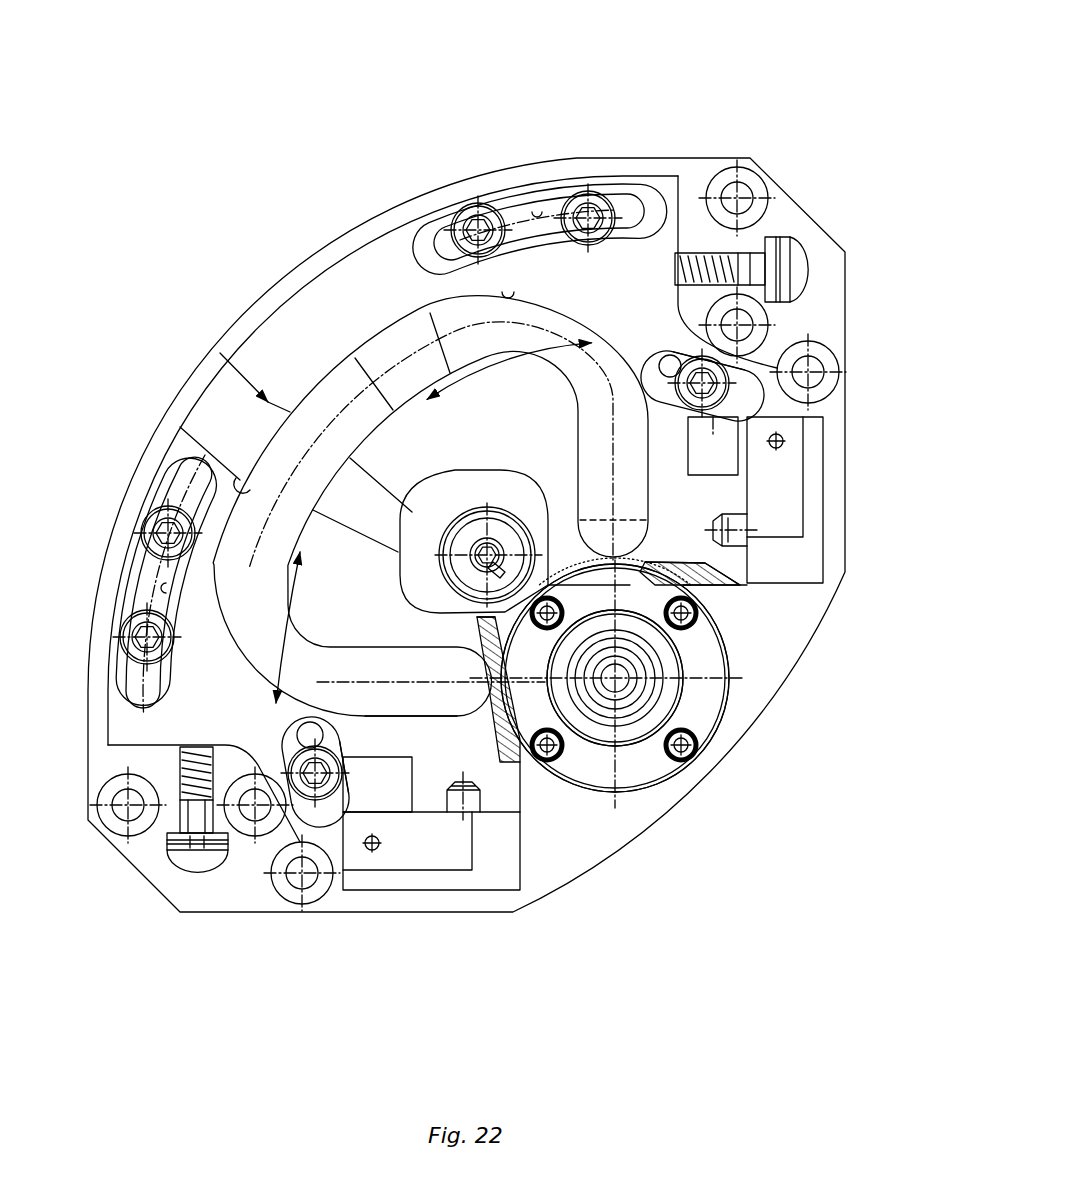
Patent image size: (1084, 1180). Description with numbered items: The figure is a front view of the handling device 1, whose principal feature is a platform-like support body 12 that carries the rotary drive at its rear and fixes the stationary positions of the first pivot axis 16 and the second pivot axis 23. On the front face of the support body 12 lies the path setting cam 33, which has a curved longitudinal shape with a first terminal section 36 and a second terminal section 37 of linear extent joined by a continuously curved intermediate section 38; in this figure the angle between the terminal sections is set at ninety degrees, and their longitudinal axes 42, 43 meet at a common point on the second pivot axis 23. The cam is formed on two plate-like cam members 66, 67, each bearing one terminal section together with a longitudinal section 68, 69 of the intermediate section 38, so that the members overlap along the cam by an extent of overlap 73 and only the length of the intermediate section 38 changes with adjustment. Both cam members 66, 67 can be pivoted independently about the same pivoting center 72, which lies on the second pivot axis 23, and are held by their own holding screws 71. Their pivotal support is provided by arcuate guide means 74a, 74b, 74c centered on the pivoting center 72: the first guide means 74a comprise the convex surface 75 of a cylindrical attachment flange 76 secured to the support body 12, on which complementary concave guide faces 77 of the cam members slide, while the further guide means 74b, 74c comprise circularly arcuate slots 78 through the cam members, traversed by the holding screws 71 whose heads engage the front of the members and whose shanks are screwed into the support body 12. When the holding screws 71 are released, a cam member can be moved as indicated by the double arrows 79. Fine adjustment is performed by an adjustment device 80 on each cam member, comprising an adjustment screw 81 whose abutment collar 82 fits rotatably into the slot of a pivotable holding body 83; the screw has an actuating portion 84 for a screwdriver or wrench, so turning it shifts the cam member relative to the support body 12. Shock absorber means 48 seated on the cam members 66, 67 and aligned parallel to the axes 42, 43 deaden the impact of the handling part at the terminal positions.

The handling device 1 is at (746, 118).
The support body 12 is at (422, 205).
The first pivot axis 16 is at (468, 535).
The second pivot axis 23 is at (615, 678).
The pivoting center 72 is at (650, 678).
The path setting cam 33 is at (328, 392).
The first terminal section 36 is at (678, 473).
The second terminal section 37 is at (405, 700).
The intermediate section 38 is at (440, 317).
The longitudinal axis 42 is at (610, 447).
The longitudinal axis 43 is at (420, 682).
The shock absorber means 48 is at (740, 520).
The cam member 66 is at (670, 183).
The cam member 67 is at (180, 447).
The longitudinal section 68 is at (247, 473).
The longitudinal section 69 is at (512, 294).
The holding screw 71 is at (590, 208).
The extent of overlap 73 is at (222, 355).
The first arcuate guide means 74a is at (705, 593).
The arcuate guide means 74b is at (740, 368).
The arcuate guide means 74c is at (623, 190).
The convex surface 75 is at (673, 578).
The attachment flange 76 is at (655, 775).
The guide face 77 is at (656, 560).
The arcuate slot 78 is at (535, 205).
The double arrow 79 is at (500, 365).
The adjustment device 80 is at (740, 238).
The adjustment screw 81 is at (743, 263).
The abutment collar 82 is at (788, 238).
The holding body 83 is at (797, 281).
The actuating portion 84 is at (193, 840).